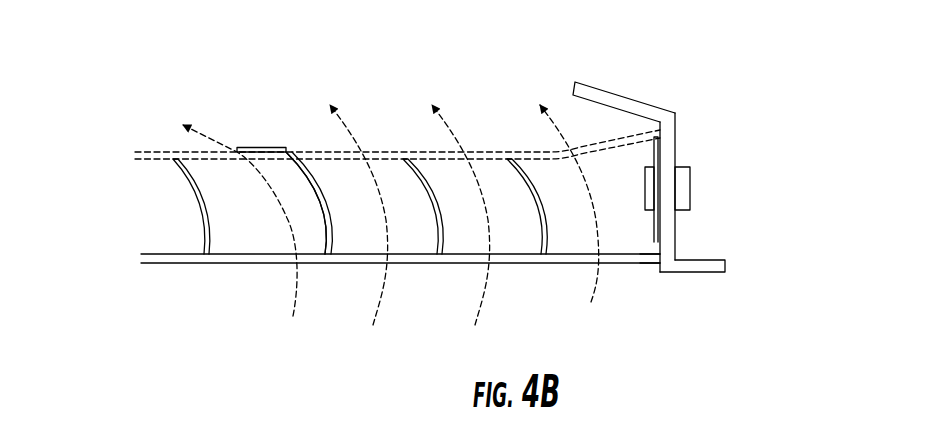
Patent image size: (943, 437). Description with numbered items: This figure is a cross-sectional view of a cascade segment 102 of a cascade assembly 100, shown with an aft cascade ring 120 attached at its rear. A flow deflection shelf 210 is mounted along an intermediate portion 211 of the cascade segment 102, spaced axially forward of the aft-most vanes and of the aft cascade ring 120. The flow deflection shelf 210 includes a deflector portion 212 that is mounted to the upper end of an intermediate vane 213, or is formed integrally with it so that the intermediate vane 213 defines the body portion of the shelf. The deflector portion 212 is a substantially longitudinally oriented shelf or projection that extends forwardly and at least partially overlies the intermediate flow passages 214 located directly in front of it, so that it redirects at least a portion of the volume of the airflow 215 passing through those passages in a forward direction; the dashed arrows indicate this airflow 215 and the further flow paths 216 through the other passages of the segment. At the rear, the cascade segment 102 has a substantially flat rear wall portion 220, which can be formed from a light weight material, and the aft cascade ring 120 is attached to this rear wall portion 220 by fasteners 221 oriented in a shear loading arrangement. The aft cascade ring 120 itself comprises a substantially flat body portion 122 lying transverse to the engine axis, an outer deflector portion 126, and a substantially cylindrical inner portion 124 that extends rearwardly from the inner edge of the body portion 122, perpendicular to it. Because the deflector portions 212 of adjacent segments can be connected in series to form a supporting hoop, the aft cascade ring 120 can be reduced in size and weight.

The cascade assembly 100 is at (476, 91).
The cascade segment 102 is at (277, 121).
The aft cascade ring 120 is at (684, 131).
The body portion 122 is at (666, 156).
The inner portion 124 is at (662, 228).
The deflector portion 126 is at (640, 101).
The flow deflection shelf 210 is at (298, 146).
The intermediate portion 211 is at (337, 266).
The deflector portion 212 is at (253, 147).
The intermediate vane 213 is at (318, 188).
The intermediate flow passages 214 is at (238, 218).
The airflow 215 is at (287, 218).
The air flow path 216 is at (382, 313).
The rear wall portion 220 is at (657, 242).
The fasteners 221 is at (685, 185).